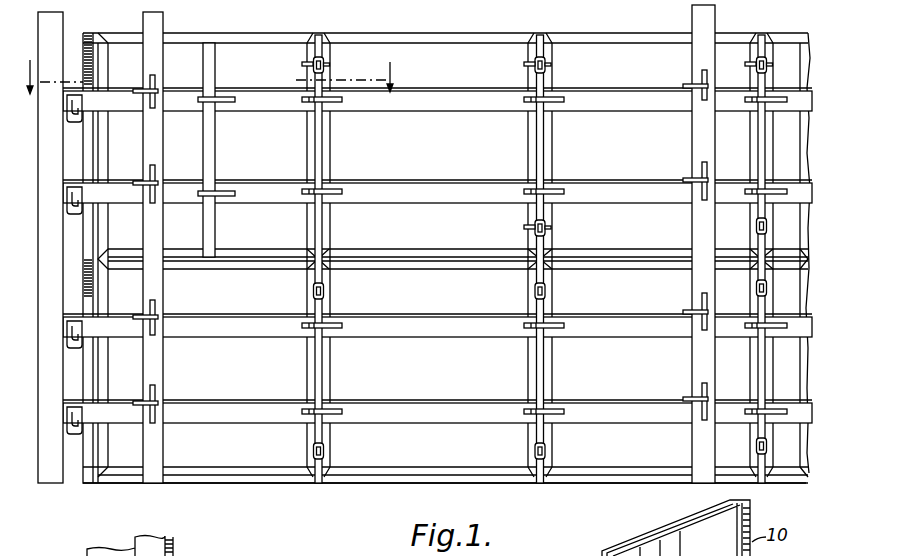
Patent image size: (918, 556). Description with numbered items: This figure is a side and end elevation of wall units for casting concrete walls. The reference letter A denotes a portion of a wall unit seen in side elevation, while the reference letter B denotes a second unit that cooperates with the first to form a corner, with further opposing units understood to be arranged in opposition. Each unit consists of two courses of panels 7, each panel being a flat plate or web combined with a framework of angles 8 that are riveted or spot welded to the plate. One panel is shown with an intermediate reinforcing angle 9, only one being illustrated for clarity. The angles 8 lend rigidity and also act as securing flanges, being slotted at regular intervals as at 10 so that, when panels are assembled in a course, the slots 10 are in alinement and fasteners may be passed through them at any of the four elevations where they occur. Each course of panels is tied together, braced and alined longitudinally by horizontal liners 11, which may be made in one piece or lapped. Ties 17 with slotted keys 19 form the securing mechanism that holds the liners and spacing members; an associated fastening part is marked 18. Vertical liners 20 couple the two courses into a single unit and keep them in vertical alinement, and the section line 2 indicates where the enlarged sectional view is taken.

The section line 2— 2 is at (216, 71).
The panel 7 is at (445, 258).
The angle 8 is at (387, 42).
The intermediate reinforcing angle 9 is at (212, 146).
The slot 10 is at (98, 150).
The liner 11 is at (462, 329).
The tie 17 is at (323, 64).
The clamp nut 18 is at (307, 63).
The key 19 is at (309, 60).
The vertical liner 20 is at (156, 287).
The wall unit A is at (446, 258).
The second wall unit B is at (50, 247).